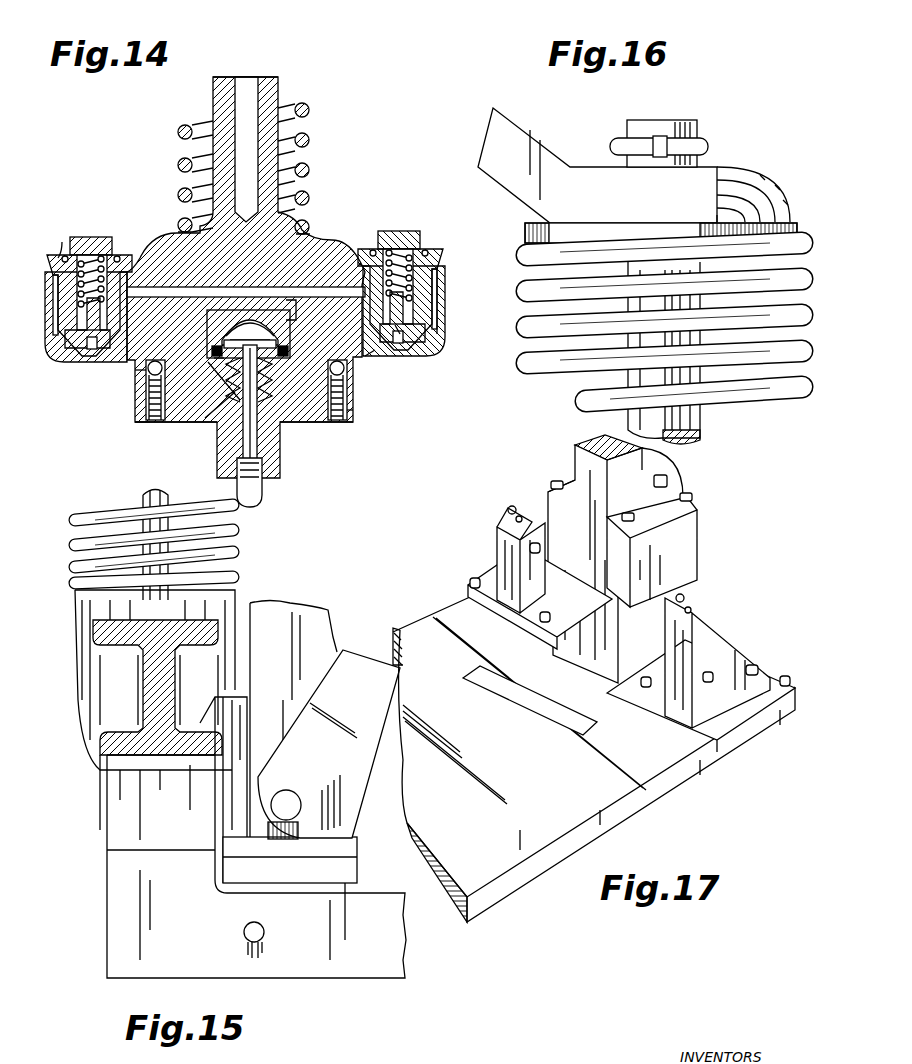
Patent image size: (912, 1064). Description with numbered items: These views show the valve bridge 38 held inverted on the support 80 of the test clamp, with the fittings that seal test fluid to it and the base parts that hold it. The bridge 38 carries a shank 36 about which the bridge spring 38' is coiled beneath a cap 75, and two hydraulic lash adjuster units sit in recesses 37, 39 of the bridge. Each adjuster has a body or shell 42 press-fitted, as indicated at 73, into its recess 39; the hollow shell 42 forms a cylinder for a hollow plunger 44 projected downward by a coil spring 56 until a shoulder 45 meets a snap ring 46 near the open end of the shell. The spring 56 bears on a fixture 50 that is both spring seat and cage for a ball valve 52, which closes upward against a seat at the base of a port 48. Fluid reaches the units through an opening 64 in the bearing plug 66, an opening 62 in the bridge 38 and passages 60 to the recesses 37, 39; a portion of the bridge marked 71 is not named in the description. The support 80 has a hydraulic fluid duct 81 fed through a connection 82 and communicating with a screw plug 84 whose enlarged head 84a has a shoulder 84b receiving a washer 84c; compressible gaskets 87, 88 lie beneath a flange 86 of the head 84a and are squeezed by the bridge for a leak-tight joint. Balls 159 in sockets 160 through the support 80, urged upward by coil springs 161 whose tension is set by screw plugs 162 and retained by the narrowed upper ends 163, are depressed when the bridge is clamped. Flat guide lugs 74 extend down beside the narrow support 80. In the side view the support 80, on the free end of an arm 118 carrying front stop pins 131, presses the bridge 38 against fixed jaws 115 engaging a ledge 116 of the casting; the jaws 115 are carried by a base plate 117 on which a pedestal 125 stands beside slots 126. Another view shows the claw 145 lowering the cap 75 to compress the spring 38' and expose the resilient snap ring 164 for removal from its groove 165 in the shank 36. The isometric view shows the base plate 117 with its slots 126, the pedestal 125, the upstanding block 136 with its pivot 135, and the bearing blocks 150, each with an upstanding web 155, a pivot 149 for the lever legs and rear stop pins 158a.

In FIG. 14, the valve bridge shank 36 is at (270, 78).
In FIG. 15, the valve bridge shank 36 is at (151, 528).
In FIG. 16, the valve bridge shank 36 is at (700, 428).
In FIG. 14, the recess 37 is at (440, 300).
In FIG. 14, the valve bridge 38 is at (378, 367).
In FIG. 15, the valve bridge 38 is at (135, 680).
In FIG. 14, the bridge spring 38' is at (256, 152).
In FIG. 15, the bridge spring 38' is at (130, 544).
In FIG. 16, the bridge spring 38' is at (650, 319).
In FIG. 14, the recess 39 is at (53, 315).
In FIG. 14, the body or shell 42 is at (48, 340).
In FIG. 14, the plunger 44 is at (112, 250).
In FIG. 14, the shoulder 45 is at (49, 239).
In FIG. 14, the snap ring 46 is at (66, 258).
In FIG. 14, the port 48 is at (402, 342).
In FIG. 14, the fixture 50 is at (84, 348).
In FIG. 14, the ball valve 52 is at (88, 350).
In FIG. 14, the coil spring 56 is at (60, 268).
In FIG. 14, the passages 60 is at (312, 292).
In FIG. 14, the opening 62 is at (252, 305).
In FIG. 14, the opening 64 is at (230, 338).
In FIG. 14, the bearing plug 66 is at (224, 344).
In FIG. 14, the body 71 is at (318, 312).
In FIG. 14, the press fit 73 is at (55, 290).
In FIG. 15, the guide lugs 74 is at (100, 790).
In FIG. 16, the cap 75 is at (745, 185).
In FIG. 14, the support 80 is at (292, 412).
In FIG. 15, the support 80 is at (117, 820).
In FIG. 14, the hydraulic fluid duct 81 is at (243, 455).
In FIG. 14, the connection 82 is at (262, 494).
In FIG. 14, the screw plug 84 is at (272, 380).
In FIG. 14, the plug head 84a is at (214, 383).
In FIG. 14, the shoulder 84b is at (192, 420).
In FIG. 14, the washer 84c is at (292, 322).
In FIG. 14, the flange 86 is at (290, 312).
In FIG. 14, the gasket 87 is at (212, 351).
In FIG. 14, the gasket 88 is at (225, 360).
In FIG. 15, the jaws 115 is at (225, 712).
In FIG. 15, the ledge 116 is at (180, 760).
In FIG. 15, the base plate 117 is at (357, 868).
In FIG. 17, the base plate 117 is at (522, 858).
In FIG. 15, the arm 118 is at (390, 965).
In FIG. 15, the pedestal 125 is at (325, 618).
In FIG. 17, the pedestal 125 is at (680, 565).
In FIG. 17, the slots 126 is at (548, 721).
In FIG. 15, the front stop pins 131 is at (262, 930).
In FIG. 17, the pivot 135 is at (670, 480).
In FIG. 17, the block 136 is at (585, 500).
In FIG. 16, the claw 145 is at (580, 180).
In FIG. 15, the pivot 149 is at (288, 800).
In FIG. 17, the pivot 149 is at (758, 668).
In FIG. 15, the block 150 is at (345, 815).
In FIG. 17, the block 150 is at (497, 553).
In FIG. 17, the web 155 is at (514, 505).
In FIG. 17, the rear stop pins 158a is at (530, 552).
In FIG. 14, the balls 159 is at (148, 368).
In FIG. 14, the sockets 160 is at (146, 395).
In FIG. 14, the coil springs 161 is at (350, 400).
In FIG. 14, the screw plugs 162 is at (148, 422).
In FIG. 14, the socket upper ends 163 is at (350, 372).
In FIG. 16, the snap ring 164 is at (702, 138).
In FIG. 16, the groove 165 is at (660, 140).